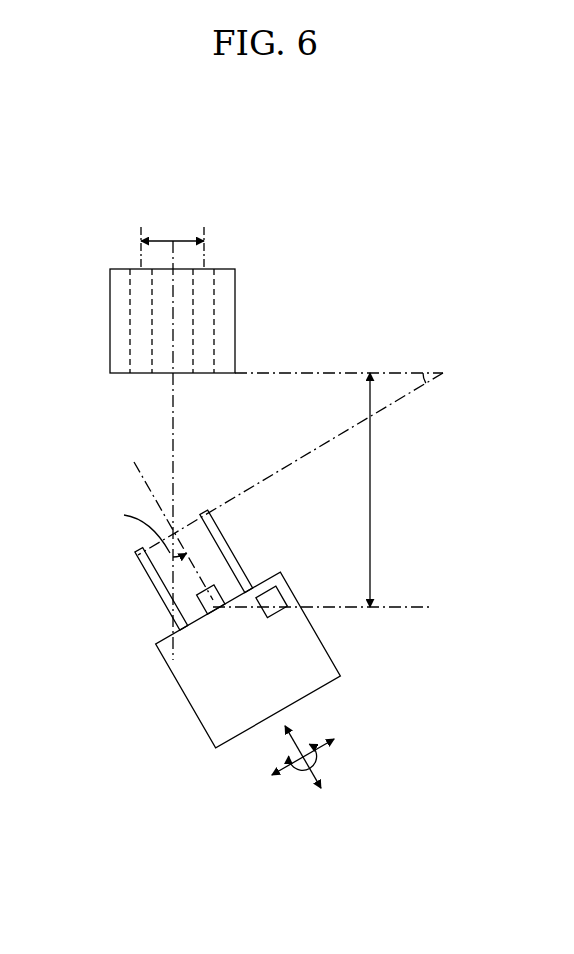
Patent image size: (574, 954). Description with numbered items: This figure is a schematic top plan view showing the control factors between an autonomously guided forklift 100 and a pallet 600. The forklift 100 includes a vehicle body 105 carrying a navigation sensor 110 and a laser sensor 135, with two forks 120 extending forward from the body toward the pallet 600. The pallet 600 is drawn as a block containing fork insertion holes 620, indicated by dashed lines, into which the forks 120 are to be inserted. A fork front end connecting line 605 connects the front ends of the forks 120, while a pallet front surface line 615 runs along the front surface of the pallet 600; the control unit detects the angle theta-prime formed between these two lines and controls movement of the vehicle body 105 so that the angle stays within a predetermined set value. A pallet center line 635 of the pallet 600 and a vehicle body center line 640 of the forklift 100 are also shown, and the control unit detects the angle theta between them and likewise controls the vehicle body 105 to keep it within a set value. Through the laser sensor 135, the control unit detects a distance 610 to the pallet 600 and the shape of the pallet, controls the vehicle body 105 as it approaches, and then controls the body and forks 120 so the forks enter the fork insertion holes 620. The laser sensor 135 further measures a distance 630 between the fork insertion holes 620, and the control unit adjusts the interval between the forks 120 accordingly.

The autonomously guided forklift 100 is at (203, 661).
The vehicle body 105 is at (208, 731).
The navigation sensor 110 is at (274, 592).
The fork 120 is at (145, 565).
The laser sensor 135 is at (200, 602).
The pallet 600 is at (110, 340).
The fork front end connecting line 605 is at (338, 436).
The distance 610 is at (372, 487).
The pallet front surface line 615 is at (320, 373).
The fork insertion hole 620 is at (131, 303).
The distance between the fork insertion holes 630 is at (181, 240).
The pallet center line 635 is at (172, 432).
The vehicle body center line 640 is at (135, 469).